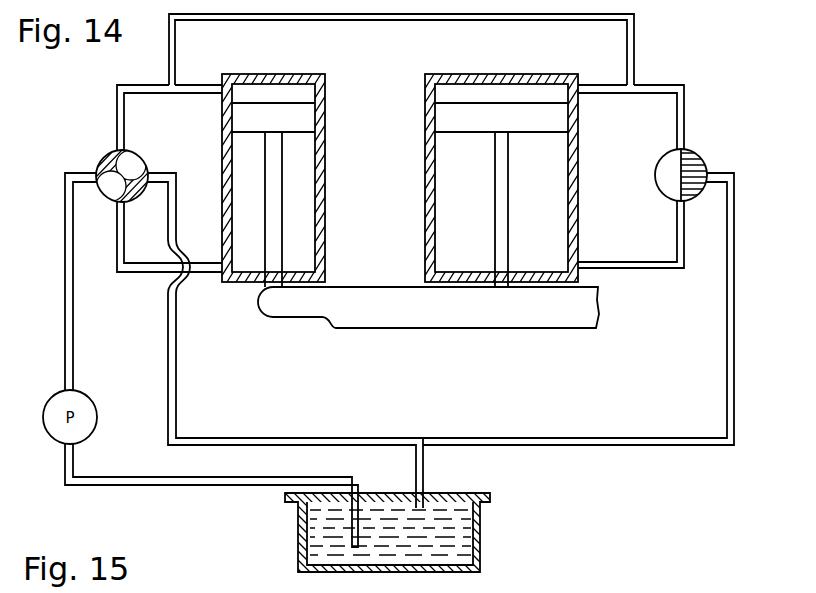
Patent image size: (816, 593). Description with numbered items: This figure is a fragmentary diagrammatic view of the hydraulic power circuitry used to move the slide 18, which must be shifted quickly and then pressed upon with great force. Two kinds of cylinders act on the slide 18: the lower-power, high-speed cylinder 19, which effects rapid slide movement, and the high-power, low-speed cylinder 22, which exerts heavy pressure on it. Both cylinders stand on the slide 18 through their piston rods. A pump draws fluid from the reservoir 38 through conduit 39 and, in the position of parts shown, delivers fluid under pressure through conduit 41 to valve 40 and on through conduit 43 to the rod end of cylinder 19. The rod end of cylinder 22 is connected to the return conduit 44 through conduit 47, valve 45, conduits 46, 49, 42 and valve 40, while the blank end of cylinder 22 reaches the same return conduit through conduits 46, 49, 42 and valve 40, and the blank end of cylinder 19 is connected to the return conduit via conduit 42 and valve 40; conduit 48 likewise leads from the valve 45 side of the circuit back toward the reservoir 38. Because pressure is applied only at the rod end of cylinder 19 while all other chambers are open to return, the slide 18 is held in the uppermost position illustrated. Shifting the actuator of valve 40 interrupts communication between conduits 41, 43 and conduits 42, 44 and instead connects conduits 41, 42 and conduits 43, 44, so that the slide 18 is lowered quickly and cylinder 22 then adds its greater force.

The slide 18 is at (371, 329).
The low-power, high-speed cylinder 19 is at (325, 97).
The high-power, low-speed cylinder 22 is at (425, 207).
The reservoir 38 is at (482, 535).
The conduit 39 is at (135, 484).
The valve 40 is at (141, 154).
The conduit 41 is at (68, 252).
The conduit 42 is at (118, 105).
The conduit 43 is at (118, 253).
The return conduit 44 is at (174, 363).
The valve 45 is at (655, 175).
The conduit 46 is at (685, 113).
The conduit 47 is at (647, 268).
The conduit 48 is at (733, 373).
The conduit 49 is at (372, 24).